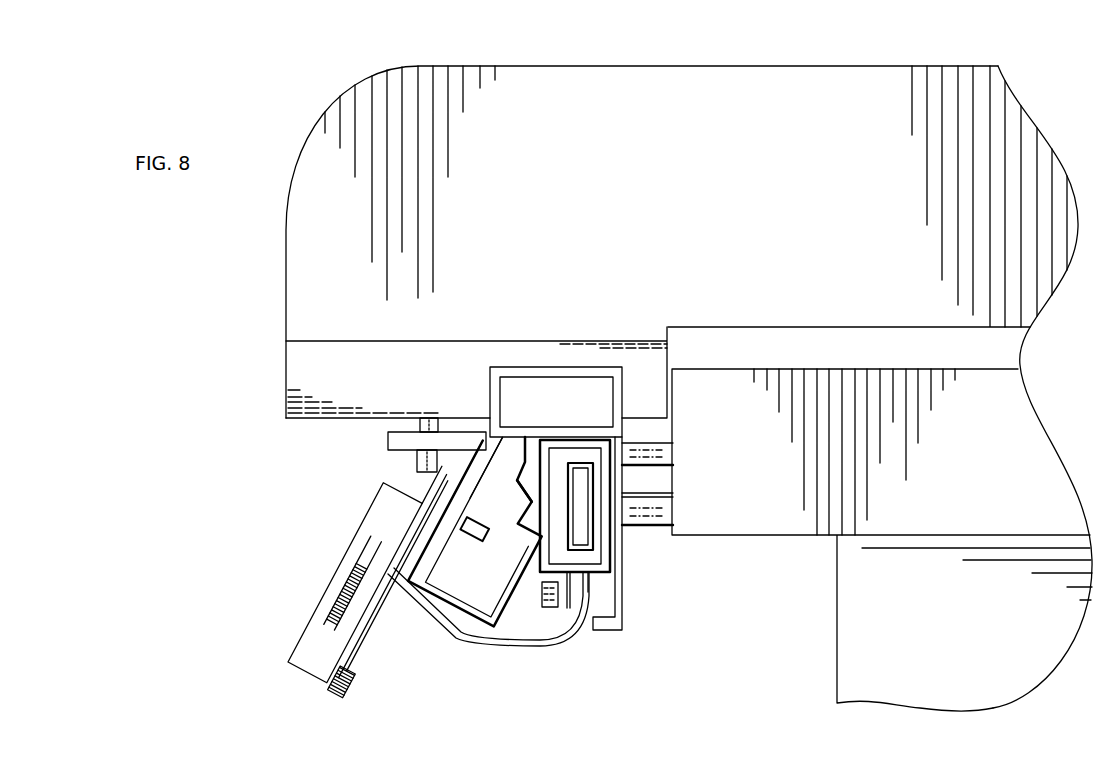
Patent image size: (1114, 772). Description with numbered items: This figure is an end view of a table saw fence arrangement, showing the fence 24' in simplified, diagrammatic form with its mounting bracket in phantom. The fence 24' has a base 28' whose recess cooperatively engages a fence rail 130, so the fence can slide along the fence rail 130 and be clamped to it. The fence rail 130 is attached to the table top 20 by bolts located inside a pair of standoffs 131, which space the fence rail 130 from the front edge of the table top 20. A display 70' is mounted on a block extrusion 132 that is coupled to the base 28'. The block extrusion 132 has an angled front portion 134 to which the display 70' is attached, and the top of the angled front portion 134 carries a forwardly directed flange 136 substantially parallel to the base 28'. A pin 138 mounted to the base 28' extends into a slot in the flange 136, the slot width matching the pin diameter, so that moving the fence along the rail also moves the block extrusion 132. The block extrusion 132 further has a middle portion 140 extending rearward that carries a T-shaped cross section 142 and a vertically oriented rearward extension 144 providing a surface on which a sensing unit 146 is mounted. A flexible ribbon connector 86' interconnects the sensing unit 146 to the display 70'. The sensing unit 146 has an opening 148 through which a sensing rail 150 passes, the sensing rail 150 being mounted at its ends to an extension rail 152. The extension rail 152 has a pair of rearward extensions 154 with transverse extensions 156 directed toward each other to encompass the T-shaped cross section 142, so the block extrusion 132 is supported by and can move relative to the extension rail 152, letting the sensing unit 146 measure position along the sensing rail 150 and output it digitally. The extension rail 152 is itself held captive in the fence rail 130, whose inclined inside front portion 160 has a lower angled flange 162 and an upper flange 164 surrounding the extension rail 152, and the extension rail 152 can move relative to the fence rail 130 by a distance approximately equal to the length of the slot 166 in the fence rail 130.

The fence 24' is at (689, 366).
The base 28' is at (452, 372).
The table top 20 is at (1017, 449).
The fence rail 130 is at (590, 368).
The standoffs 131 is at (672, 455).
The opening 148 is at (590, 485).
The sensing rail 150 is at (580, 502).
The rearward extension 144 is at (600, 538).
The sensing unit 146 is at (612, 552).
The T-shaped cross section 142 is at (525, 562).
The ribbon connector 86' is at (503, 625).
The transverse extensions 156 is at (538, 633).
The middle portion 140 is at (493, 622).
The extension rail 152 is at (423, 552).
The rearward extensions 154 is at (520, 486).
The upper flange 164 is at (482, 470).
The flange 136 is at (388, 443).
The pin 138 is at (418, 426).
The inclined inside front portion 160 is at (432, 462).
The slot 166 is at (430, 510).
The lower angled flange 162 is at (364, 641).
The display 70' is at (336, 583).
The angled front portion 134 is at (351, 686).
The block extrusion 132 is at (350, 700).